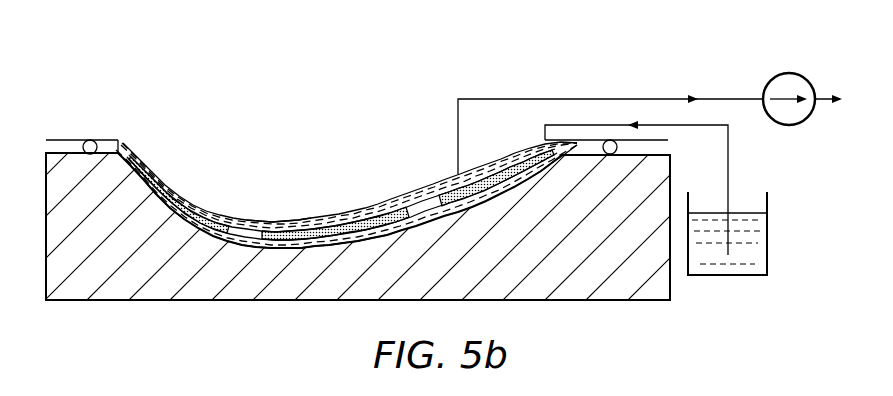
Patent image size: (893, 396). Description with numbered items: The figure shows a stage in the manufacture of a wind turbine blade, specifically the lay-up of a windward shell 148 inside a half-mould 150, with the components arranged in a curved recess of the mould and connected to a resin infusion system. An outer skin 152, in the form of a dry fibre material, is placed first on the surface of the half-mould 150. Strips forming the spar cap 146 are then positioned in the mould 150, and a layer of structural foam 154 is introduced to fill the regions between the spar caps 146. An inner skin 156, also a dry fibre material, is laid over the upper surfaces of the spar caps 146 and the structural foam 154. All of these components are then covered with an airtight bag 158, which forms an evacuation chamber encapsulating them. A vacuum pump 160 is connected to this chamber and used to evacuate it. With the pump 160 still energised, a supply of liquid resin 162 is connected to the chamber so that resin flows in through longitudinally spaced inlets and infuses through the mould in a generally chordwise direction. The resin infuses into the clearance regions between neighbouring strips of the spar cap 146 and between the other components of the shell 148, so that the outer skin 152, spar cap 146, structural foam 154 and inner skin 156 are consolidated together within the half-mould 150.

The spar cap 146 is at (247, 218).
The windward shell 148 is at (174, 163).
The half-mould 150 is at (76, 293).
The outer skin 152 is at (392, 196).
The structural foam 154 is at (341, 216).
The inner skin 156 is at (281, 221).
The airtight bag 158 is at (190, 194).
The vacuum pump 160 is at (790, 73).
The liquid resin 162 is at (757, 253).